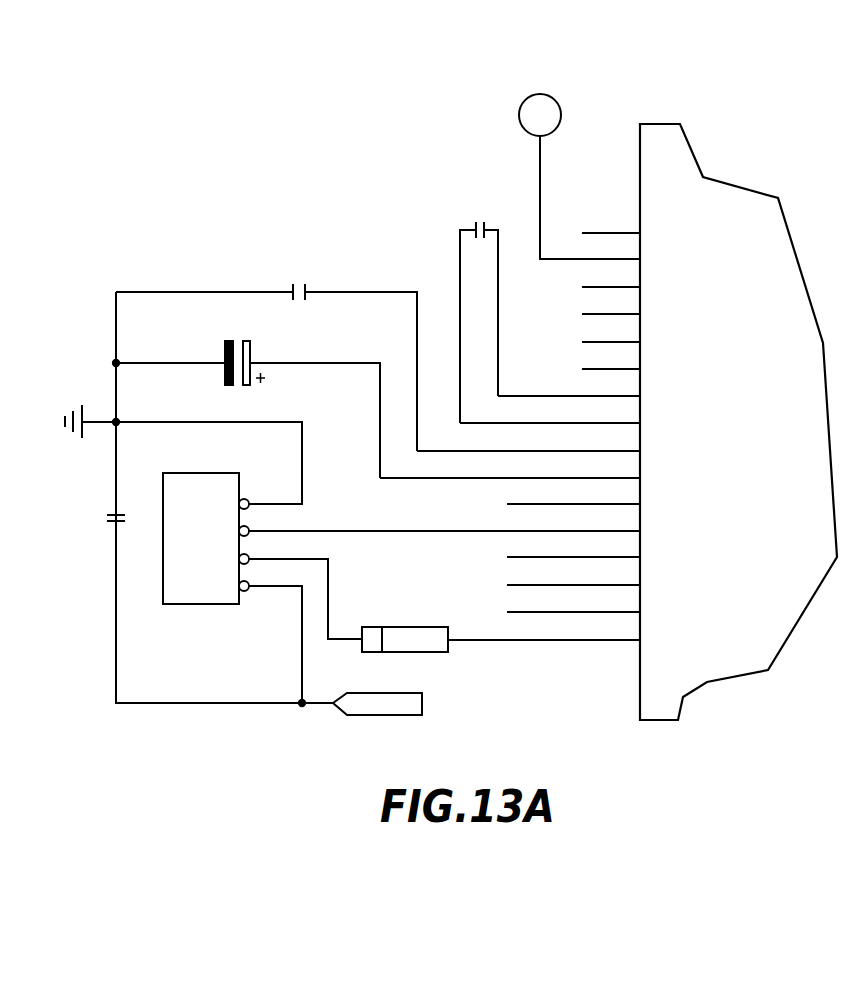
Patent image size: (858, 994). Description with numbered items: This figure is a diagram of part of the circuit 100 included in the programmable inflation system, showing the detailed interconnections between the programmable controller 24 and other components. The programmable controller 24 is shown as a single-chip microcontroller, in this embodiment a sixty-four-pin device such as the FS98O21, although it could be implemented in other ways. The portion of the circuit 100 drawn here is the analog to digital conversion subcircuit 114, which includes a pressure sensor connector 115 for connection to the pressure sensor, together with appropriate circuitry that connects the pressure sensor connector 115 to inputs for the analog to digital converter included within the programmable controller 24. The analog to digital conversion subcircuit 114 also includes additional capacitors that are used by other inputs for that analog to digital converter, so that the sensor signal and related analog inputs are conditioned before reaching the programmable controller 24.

The circuit 100 is at (686, 75).
The analog to digital (A/D) conversion subcircuit 114 is at (513, 191).
The pressure sensor connector 115 is at (200, 473).
The programmable controller 24 is at (801, 502).